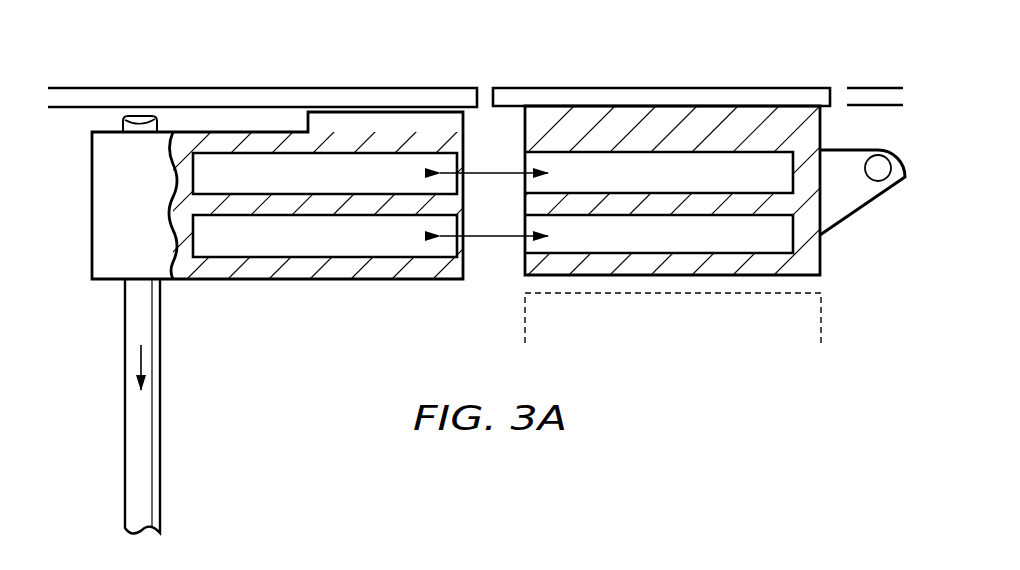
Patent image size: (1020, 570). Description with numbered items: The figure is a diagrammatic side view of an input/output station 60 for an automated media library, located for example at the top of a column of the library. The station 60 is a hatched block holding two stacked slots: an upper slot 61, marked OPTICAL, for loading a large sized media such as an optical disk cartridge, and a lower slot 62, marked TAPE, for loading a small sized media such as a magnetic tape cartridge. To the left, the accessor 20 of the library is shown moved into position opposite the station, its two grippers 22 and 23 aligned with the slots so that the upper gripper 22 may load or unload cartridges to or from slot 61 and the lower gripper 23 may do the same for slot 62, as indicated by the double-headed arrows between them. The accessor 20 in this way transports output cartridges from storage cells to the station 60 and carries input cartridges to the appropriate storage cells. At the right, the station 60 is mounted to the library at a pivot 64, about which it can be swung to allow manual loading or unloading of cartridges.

The accessor 20 is at (92, 200).
The gripper 22 is at (272, 162).
The gripper 23 is at (265, 247).
The input/output station 60 is at (676, 88).
The slot 61 is at (587, 158).
The slot 62 is at (592, 243).
The pivot 64 is at (878, 181).